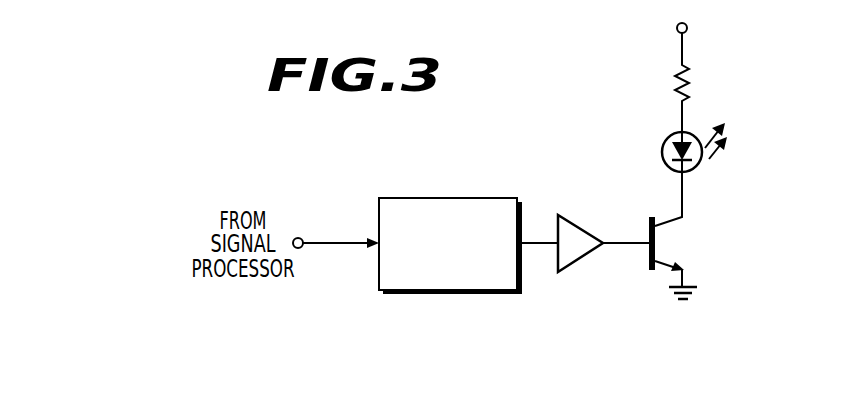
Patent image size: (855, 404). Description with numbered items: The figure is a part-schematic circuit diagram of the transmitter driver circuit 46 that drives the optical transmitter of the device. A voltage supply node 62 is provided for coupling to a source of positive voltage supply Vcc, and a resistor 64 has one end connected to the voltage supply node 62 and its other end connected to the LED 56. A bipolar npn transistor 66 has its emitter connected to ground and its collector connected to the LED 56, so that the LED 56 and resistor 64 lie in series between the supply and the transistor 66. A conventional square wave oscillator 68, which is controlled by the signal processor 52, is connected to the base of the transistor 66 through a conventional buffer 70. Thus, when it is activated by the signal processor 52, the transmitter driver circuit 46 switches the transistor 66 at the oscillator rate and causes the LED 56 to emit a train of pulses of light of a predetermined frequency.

The transmitter driver circuit 46 is at (481, 126).
The signal processor 52 is at (300, 238).
The LED 56 is at (662, 150).
The voltage supply node 62 is at (677, 28).
The resistor 64 is at (677, 77).
The bipolar npn transistor 66 is at (673, 245).
The square wave oscillator 68 is at (452, 196).
The buffer 70 is at (585, 228).